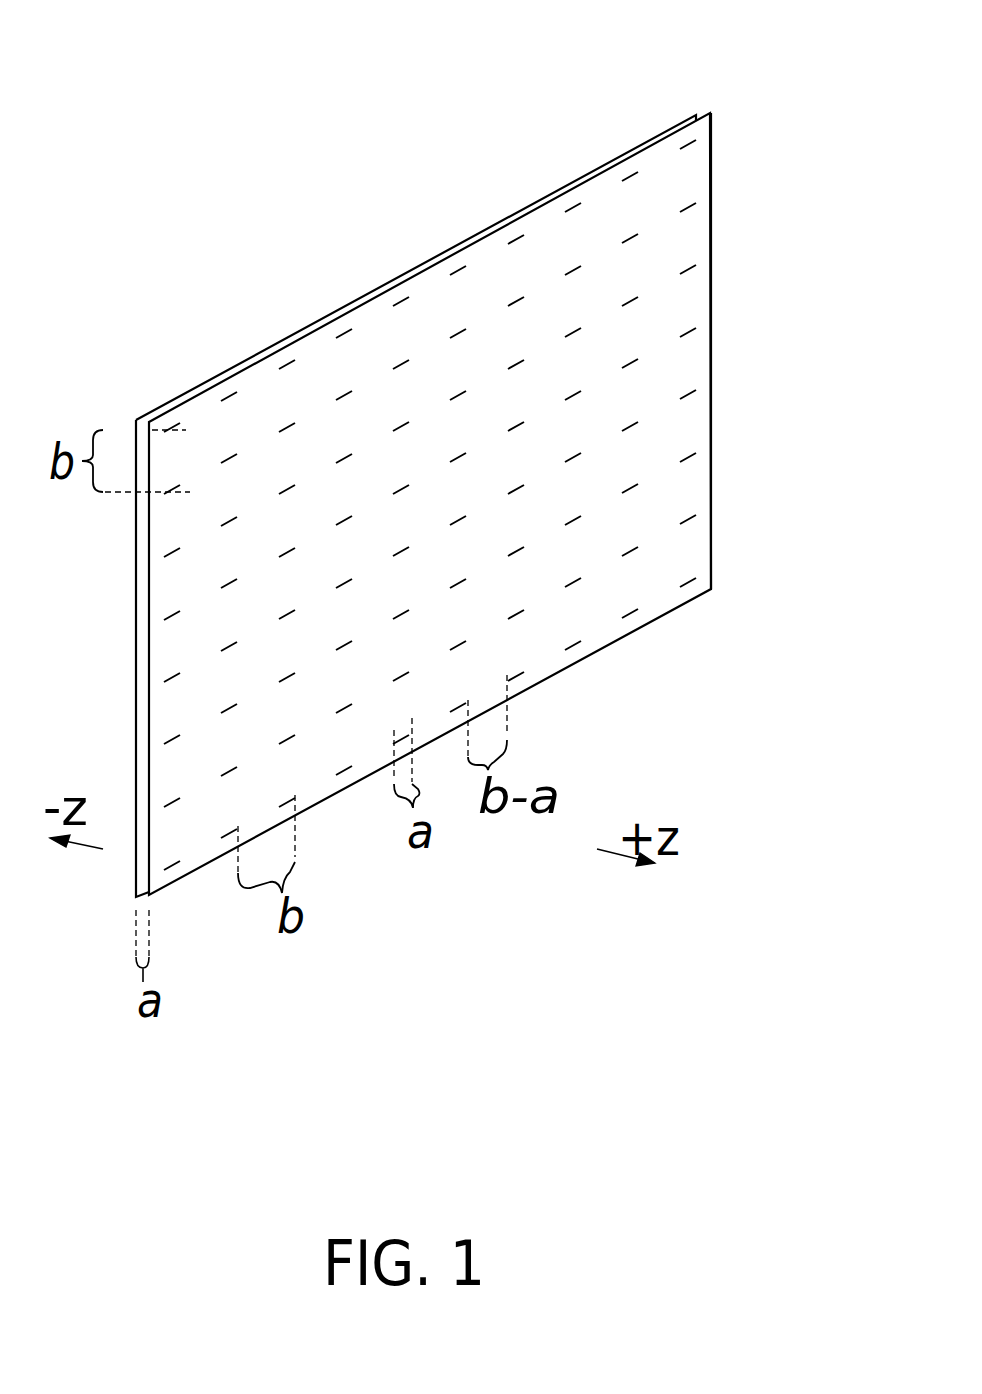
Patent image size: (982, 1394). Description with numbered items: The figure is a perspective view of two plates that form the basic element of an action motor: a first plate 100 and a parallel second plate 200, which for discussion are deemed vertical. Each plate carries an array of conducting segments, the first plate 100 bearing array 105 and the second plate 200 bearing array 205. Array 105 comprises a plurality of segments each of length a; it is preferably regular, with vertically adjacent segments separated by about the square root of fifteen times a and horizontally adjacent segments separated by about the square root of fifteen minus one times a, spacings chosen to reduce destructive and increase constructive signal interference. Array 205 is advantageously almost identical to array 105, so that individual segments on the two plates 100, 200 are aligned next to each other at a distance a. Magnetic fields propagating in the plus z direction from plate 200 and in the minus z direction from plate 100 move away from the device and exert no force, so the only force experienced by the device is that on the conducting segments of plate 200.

The first plate 100 is at (638, 143).
The array 105 is at (374, 272).
The second plate 200 is at (711, 150).
The array 205 is at (722, 344).